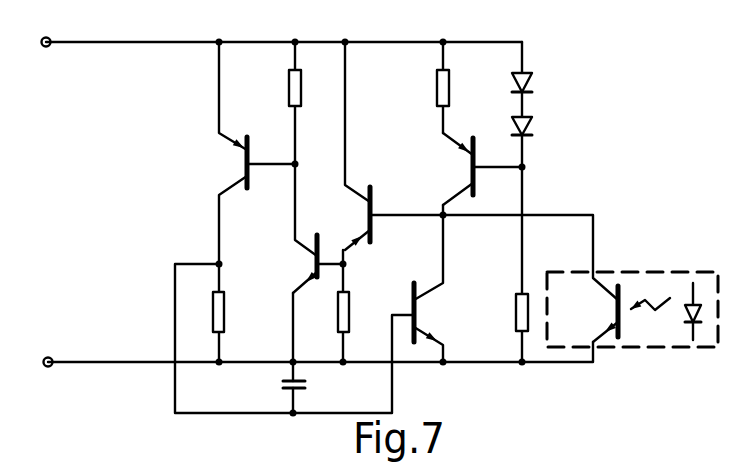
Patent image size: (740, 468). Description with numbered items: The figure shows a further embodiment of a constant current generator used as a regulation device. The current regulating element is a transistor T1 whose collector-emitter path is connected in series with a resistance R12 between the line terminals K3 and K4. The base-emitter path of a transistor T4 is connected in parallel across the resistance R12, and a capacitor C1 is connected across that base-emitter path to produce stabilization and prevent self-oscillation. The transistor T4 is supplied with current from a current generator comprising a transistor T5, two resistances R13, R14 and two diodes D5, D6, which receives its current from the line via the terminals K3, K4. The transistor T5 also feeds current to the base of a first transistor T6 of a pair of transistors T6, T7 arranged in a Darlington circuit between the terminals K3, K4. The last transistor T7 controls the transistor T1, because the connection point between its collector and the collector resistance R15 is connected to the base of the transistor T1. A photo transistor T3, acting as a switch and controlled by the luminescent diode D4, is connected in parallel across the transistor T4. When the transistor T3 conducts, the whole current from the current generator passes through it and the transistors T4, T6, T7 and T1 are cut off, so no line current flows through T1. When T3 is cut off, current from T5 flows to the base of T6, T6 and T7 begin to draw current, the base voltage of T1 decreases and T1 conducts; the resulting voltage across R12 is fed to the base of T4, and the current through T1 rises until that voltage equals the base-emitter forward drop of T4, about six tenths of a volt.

The terminal K3 is at (40, 49).
The terminal K4 is at (42, 369).
The transistor T1 is at (241, 163).
The photo transistor T3 is at (612, 316).
The transistor T4 is at (411, 322).
The transistor T5 is at (468, 167).
The first transistor T6 is at (372, 231).
The last transistor T7 is at (312, 266).
The resistance R12 is at (224, 297).
The resistance R13 is at (449, 76).
The resistance R14 is at (515, 312).
The collector resistance R15 is at (301, 76).
The capacitor C1 is at (305, 385).
The luminescent diode D4 is at (688, 323).
The diode D5 is at (537, 83).
The diode D6 is at (537, 126).